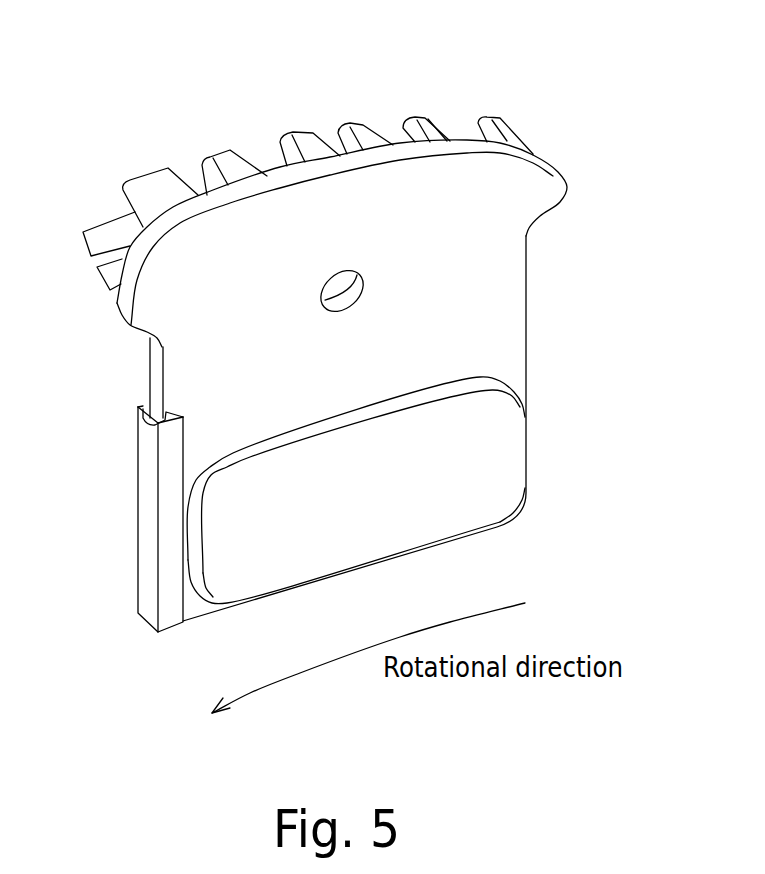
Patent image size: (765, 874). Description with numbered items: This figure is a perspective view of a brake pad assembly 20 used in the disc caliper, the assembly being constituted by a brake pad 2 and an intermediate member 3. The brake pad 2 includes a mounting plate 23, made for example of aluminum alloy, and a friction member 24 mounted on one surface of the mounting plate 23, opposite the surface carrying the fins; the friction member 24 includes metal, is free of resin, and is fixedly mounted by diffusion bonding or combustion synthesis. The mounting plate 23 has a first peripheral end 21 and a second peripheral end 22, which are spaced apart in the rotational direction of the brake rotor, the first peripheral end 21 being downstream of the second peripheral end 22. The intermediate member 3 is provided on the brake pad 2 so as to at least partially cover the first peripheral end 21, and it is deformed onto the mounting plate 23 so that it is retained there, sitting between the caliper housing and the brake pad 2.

The brake pad assembly 20 is at (367, 323).
The brake pad 2 is at (345, 358).
The intermediate member 3 is at (150, 523).
The first peripheral end 21 is at (157, 365).
The second peripheral end 22 is at (527, 345).
The mounting plate 23 is at (528, 272).
The friction member 24 is at (502, 457).